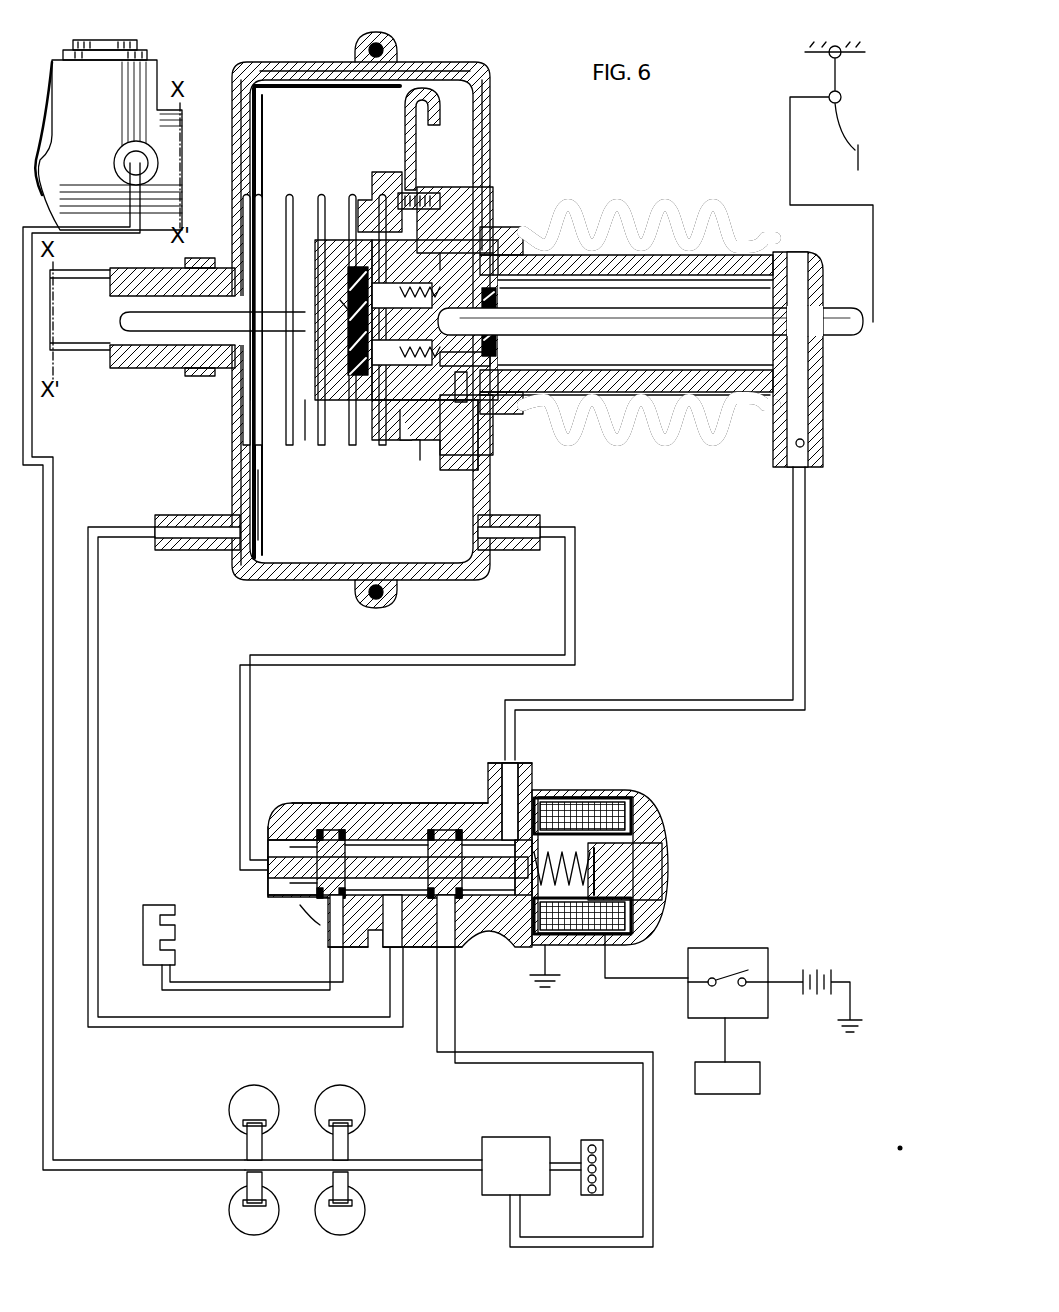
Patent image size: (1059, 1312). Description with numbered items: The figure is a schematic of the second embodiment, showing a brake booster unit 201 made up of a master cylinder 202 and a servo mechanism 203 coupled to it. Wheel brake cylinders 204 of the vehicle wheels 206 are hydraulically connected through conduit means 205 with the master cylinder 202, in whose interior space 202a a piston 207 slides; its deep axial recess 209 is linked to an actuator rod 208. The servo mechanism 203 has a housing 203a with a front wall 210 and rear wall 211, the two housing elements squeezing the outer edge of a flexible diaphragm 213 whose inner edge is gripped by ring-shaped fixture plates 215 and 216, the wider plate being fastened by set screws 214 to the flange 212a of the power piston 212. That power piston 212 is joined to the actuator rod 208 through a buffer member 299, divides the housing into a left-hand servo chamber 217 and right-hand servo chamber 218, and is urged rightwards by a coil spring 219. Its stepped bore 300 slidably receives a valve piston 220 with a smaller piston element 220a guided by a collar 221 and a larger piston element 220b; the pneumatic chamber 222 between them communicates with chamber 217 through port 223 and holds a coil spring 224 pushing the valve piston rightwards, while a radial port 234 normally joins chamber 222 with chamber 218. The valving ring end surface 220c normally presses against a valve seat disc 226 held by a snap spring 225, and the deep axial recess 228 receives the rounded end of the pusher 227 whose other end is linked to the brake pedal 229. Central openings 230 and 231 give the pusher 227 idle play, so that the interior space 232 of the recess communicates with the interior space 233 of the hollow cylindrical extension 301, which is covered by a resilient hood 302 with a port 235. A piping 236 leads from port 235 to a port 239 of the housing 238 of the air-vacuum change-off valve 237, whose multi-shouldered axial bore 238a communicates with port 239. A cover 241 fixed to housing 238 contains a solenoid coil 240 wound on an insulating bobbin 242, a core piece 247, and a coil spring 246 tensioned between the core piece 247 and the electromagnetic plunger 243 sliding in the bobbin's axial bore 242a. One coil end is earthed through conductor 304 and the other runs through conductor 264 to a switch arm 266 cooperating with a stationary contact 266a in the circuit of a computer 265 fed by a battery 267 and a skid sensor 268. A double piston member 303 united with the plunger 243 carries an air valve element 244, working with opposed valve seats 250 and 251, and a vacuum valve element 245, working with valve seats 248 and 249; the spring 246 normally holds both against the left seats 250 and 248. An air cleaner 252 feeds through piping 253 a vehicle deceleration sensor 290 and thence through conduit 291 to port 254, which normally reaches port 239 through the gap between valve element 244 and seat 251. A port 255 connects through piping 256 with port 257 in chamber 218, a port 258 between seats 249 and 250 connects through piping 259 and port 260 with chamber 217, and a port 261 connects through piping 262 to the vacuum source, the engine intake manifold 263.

The brake booster unit 201 is at (565, 188).
The master cylinder 202 is at (93, 382).
The interior space 202a is at (133, 293).
The servo mechanism 203 is at (287, 66).
The housing 203a is at (322, 68).
The wheel brake cylinders 204 is at (333, 1203).
The conduit means 205 is at (53, 745).
The vehicle wheels 206 is at (330, 1228).
The piston 207 is at (137, 337).
The deep axial recess 209 is at (173, 337).
The actuator rod 208 is at (262, 365).
The front wall 210 is at (235, 98).
The rear wall 211 is at (488, 100).
The power piston 212 is at (263, 445).
The flange 212a is at (450, 480).
The flexible diaphragm 213 is at (405, 72).
The set screws 214 is at (400, 228).
The fixture plate 215 is at (405, 210).
The fixture plate 216 is at (440, 152).
The left hand servo chamber 217 is at (327, 322).
The right hand servo chamber 218 is at (465, 540).
The coil spring 219 is at (258, 470).
The valve piston 220 is at (435, 320).
The smaller piston element 220a is at (350, 220).
The larger piston element 220b is at (437, 445).
The valving ring end surface 220c is at (490, 258).
The collar 221 is at (402, 296).
The pneumatic chamber 222 is at (323, 400).
The port 223 is at (313, 440).
The coil spring 224 is at (472, 253).
The snap spring 225 is at (495, 267).
The valve seat disc 226 is at (490, 422).
The piston rod or pusher 227 is at (668, 320).
The deep axial recess 228 is at (452, 310).
The brake pedal 229 is at (838, 130).
The central opening 230 is at (490, 350).
The central opening 231 is at (505, 364).
The interior space 232 is at (460, 408).
The interior space 233 is at (626, 323).
The radial port 234 is at (488, 440).
The port 235 is at (805, 446).
The piping 236 is at (797, 565).
The air-vacuum change-off valve 237 is at (523, 986).
The housing 238 is at (393, 817).
The multi-shouldered axial bore 238a is at (410, 950).
The port 239 is at (527, 763).
The solenoid coil 240 is at (583, 810).
The cover 241 is at (640, 850).
The bobbin 242 is at (636, 805).
The axial bore 242a is at (638, 828).
The electromagnetic plunger 243 is at (530, 932).
The valve element 244 is at (448, 888).
The valve element 245 is at (322, 830).
The coil spring 246 is at (645, 890).
The core piece 247 is at (648, 875).
The valve seat 248 is at (300, 833).
The valve seat 249 is at (387, 830).
The valve seat 250 is at (423, 835).
The valve seat 251 is at (478, 820).
The air cleaner 252 is at (578, 1192).
The piping 253 is at (567, 1160).
The port 254 is at (445, 947).
The port 255 is at (277, 873).
The piping 256 is at (320, 657).
The port 257 is at (518, 540).
The port 258 is at (388, 945).
The piping 259 is at (120, 1027).
The port 260 is at (180, 538).
The port 261 is at (320, 923).
The piping 262 is at (260, 988).
The engine intake manifold 263 is at (125, 900).
The conductor 264 is at (625, 978).
The computer 265 is at (750, 948).
The switch arm 266 is at (725, 973).
The stationary contact 266a is at (727, 1043).
The battery 267 is at (817, 965).
The skid sensor 268 is at (727, 1078).
The vehicle deceleration sensor 290 is at (516, 1166).
The conduit 291 is at (652, 1185).
The buffer member 299 is at (345, 305).
The stepped bore 300 is at (445, 252).
The cylindrical extension 301 is at (648, 262).
The resilient hood 302 is at (636, 437).
The double piston member 303 is at (330, 935).
The conductor 304 is at (570, 976).